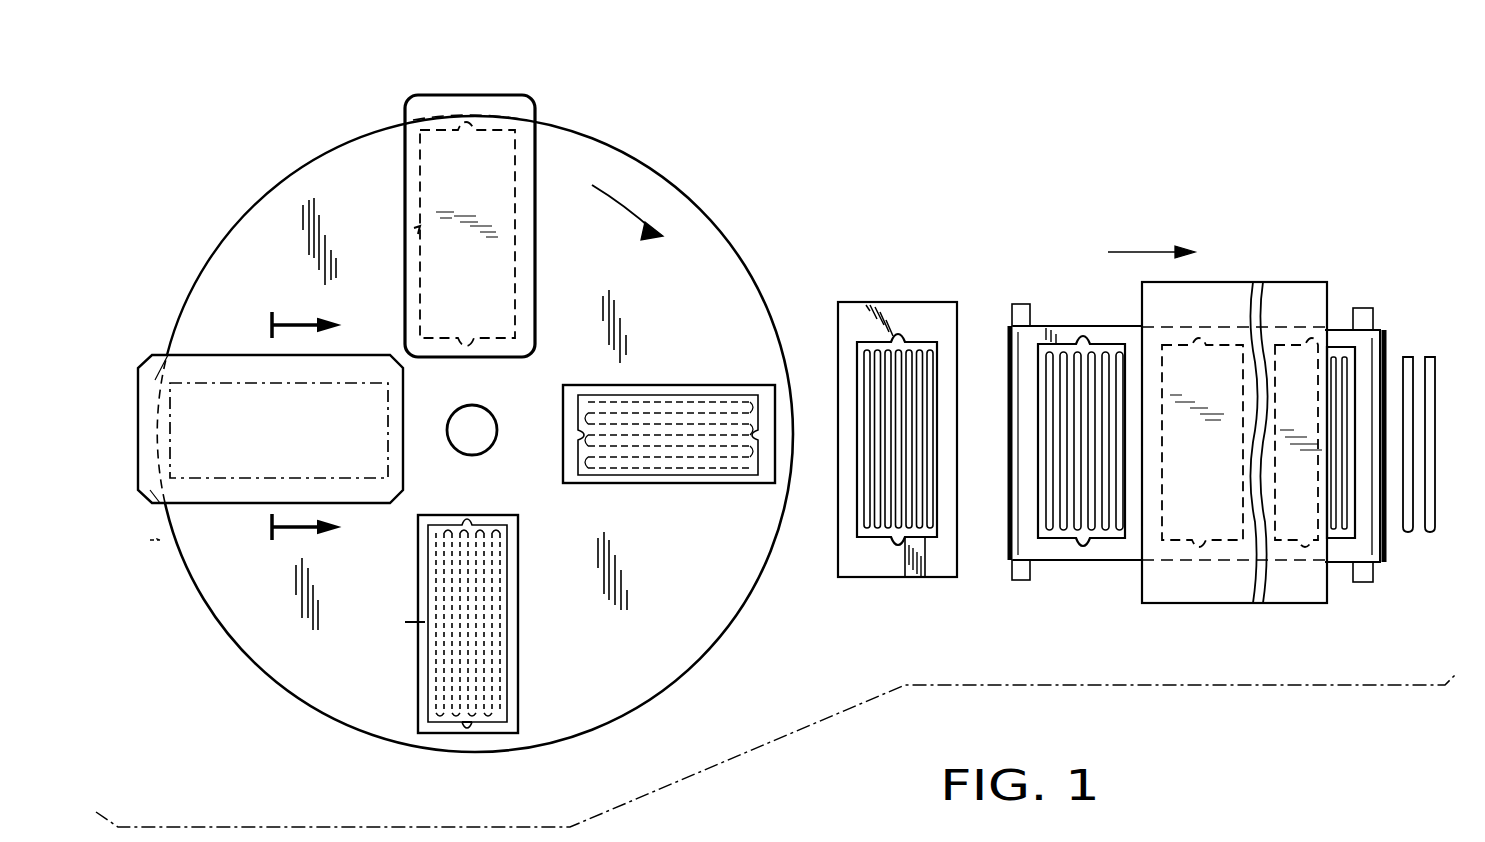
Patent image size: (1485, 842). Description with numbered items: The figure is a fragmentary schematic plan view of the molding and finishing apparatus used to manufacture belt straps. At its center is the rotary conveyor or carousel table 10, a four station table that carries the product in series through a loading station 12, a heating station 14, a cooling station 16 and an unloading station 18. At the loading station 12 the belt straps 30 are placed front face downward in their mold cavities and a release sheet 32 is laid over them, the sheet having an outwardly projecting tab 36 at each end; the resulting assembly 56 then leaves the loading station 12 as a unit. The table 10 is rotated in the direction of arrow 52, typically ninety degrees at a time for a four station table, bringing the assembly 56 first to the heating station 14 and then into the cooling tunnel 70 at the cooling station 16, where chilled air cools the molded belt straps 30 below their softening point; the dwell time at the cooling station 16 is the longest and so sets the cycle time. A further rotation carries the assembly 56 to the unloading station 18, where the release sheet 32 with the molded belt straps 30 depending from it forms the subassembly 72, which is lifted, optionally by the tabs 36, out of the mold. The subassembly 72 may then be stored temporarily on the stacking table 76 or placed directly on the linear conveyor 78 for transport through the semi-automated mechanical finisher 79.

The rotary conveyor or carousel table 10 is at (284, 165).
The loading station 12 is at (418, 700).
The heating station 14 is at (190, 340).
The cooling station 16 is at (405, 152).
The unloading station 18 is at (718, 385).
The belt strap 30 is at (518, 690).
The release sheet 32 is at (498, 722).
The tab 36 is at (562, 432).
The arrow 52 is at (635, 213).
The assembly 56 is at (408, 226).
The cooling tunnel 70 is at (540, 102).
The subassembly 72 is at (843, 515).
The stacking table 76 is at (896, 565).
The linear conveyor 78 is at (1059, 561).
The semi-automated mechanical finisher 79 is at (1195, 603).